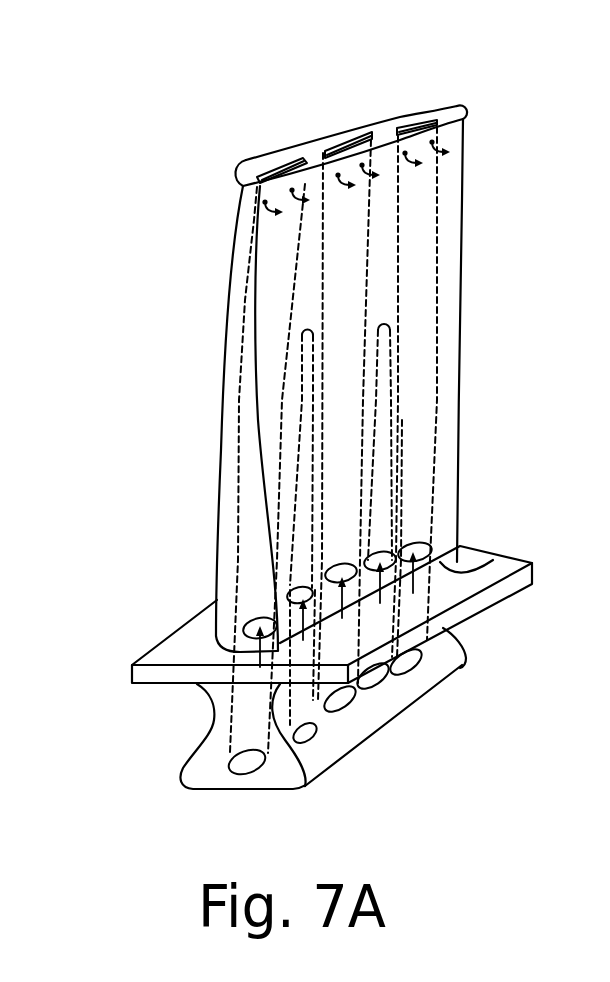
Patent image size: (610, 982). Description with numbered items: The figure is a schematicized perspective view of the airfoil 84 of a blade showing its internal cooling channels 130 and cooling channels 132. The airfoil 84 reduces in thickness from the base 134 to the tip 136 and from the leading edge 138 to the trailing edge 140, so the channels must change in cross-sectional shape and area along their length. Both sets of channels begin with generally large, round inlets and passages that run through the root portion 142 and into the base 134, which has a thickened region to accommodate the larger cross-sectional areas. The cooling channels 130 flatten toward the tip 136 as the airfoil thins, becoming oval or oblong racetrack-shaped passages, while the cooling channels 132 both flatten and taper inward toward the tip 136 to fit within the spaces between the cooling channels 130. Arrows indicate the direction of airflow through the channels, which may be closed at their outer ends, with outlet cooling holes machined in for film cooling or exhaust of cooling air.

The airfoil 84 is at (181, 413).
The cooling channels 130 is at (413, 193).
The cooling channels 132 is at (375, 632).
The base 134 is at (493, 560).
The tip 136 is at (452, 108).
The leading edge 138 is at (220, 488).
The trailing edge 140 is at (460, 307).
The root portion 142 is at (227, 723).